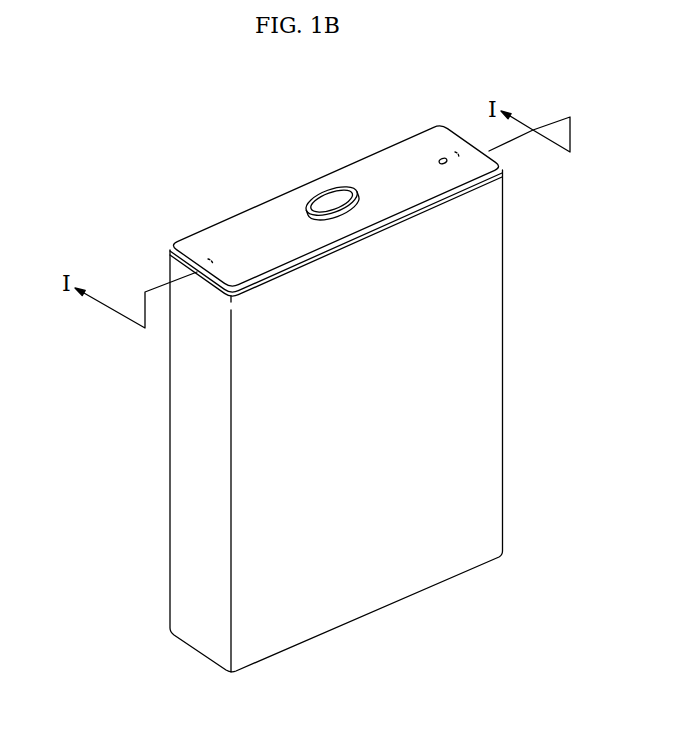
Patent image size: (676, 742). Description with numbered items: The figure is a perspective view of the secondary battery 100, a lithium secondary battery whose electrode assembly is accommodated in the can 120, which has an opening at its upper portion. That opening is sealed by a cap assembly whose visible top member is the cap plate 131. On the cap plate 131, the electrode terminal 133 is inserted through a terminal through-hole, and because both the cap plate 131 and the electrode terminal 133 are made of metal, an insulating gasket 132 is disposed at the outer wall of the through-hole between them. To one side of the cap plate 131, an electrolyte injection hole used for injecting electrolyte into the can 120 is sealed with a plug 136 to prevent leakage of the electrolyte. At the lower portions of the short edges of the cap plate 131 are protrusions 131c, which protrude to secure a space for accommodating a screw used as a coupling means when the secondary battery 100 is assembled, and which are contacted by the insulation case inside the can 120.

The secondary battery 100 is at (62, 127).
The can 120 is at (196, 402).
The cap plate 131 is at (257, 223).
The protrusions 131c is at (213, 258).
The gasket 132 is at (342, 191).
The electrode terminal 133 is at (320, 203).
The plug 136 is at (440, 159).